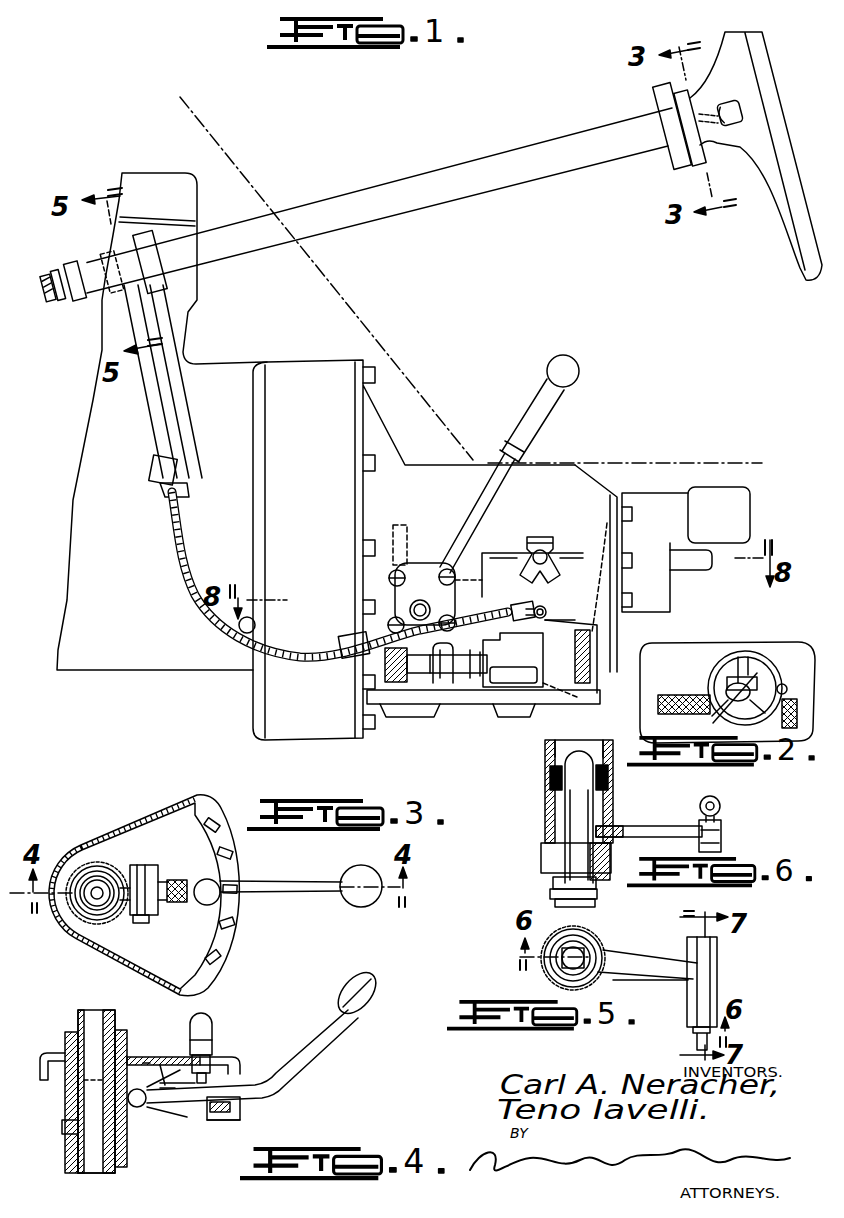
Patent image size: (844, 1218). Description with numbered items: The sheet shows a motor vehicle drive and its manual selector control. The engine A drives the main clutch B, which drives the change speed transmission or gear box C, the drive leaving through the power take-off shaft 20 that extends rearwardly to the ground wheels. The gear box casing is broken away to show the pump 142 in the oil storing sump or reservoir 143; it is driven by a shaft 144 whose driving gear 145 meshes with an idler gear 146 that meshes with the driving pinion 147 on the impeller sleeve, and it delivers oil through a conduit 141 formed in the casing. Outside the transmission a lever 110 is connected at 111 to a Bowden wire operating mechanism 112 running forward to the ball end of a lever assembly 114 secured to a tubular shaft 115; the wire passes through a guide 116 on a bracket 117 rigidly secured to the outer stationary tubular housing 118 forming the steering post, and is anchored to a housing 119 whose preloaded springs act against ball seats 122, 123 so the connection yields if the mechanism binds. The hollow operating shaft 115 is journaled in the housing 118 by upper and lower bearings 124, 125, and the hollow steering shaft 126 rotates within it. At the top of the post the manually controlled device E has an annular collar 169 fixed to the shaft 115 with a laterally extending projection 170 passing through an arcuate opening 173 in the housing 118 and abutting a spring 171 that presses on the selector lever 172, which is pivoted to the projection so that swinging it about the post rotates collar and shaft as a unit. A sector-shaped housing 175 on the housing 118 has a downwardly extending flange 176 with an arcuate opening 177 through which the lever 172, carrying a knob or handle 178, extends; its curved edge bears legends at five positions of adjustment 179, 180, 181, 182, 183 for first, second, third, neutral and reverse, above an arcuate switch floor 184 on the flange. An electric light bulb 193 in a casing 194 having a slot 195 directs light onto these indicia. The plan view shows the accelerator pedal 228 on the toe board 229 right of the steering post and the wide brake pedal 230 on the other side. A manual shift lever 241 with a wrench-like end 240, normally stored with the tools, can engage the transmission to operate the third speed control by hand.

In FIG. 1, the power take-off shaft 20 is at (689, 571).
In FIG. 1, the lever 110 is at (547, 586).
In FIG. 1, the connection 111 is at (534, 610).
In FIG. 1, the Bowden wire operating mechanism 112 is at (288, 662).
In FIG. 6, the lever assembly 114 is at (674, 835).
In FIG. 5, the lever assembly 114 is at (680, 973).
In FIG. 4, the hollow operating shaft 115 is at (120, 1160).
In FIG. 6, the hollow operating shaft 115 is at (563, 741).
In FIG. 1, the guide 116 is at (151, 485).
In FIG. 1, the bracket 117 is at (175, 404).
In FIG. 1, the outer stationary tubular housing 118 is at (220, 261).
In FIG. 2, the outer stationary tubular housing 118 is at (736, 662).
In FIG. 4, the outer stationary tubular housing 118 is at (67, 1160).
In FIG. 6, the outer stationary tubular housing 118 is at (547, 817).
In FIG. 5, the outer stationary tubular housing 118 is at (598, 942).
In FIG. 6, the housing 119 is at (721, 803).
In FIG. 5, the housing 119 is at (700, 1003).
In FIG. 1, the ball seat 122 is at (773, 84).
In FIG. 2, the ball seat 122 is at (705, 680).
In FIG. 4, the ball seat 123 is at (143, 1062).
In FIG. 3, the upper bearing 124 is at (141, 923).
In FIG. 4, the upper bearing 124 is at (133, 1108).
In FIG. 2, the lower bearing 125 is at (740, 695).
In FIG. 4, the lower bearing 125 is at (233, 1056).
In FIG. 6, the lower bearing 125 is at (550, 778).
In FIG. 1, the hollow steering shaft 126 is at (44, 302).
In FIG. 4, the hollow steering shaft 126 is at (90, 1168).
In FIG. 6, the hollow steering shaft 126 is at (607, 778).
In FIG. 1, the conduit 141 is at (606, 624).
In FIG. 1, the pump 142 is at (488, 664).
In FIG. 1, the oil storing sump or reservoir 143 is at (435, 706).
In FIG. 1, the shaft 144 is at (462, 684).
In FIG. 1, the driving gear 145 is at (396, 683).
In FIG. 1, the idler gear 146 is at (389, 591).
In FIG. 1, the driving pinion 147 is at (410, 536).
In FIG. 4, the annular collar 169 is at (65, 1101).
In FIG. 3, the laterally extending projection 170 is at (187, 878).
In FIG. 4, the laterally extending projection 170 is at (163, 1070).
In FIG. 4, the spring 171 is at (170, 1093).
In FIG. 3, the selector lever 172 is at (312, 894).
In FIG. 4, the selector lever 172 is at (317, 1052).
In FIG. 3, the arcuate opening 173 is at (112, 866).
In FIG. 3, the housing 175 is at (200, 797).
In FIG. 4, the flange 176 is at (240, 1110).
In FIG. 4, the arcuate opening 177 is at (240, 1070).
In FIG. 2, the knob or handle 178 is at (781, 684).
In FIG. 3, the knob or handle 178 is at (368, 907).
In FIG. 4, the knob or handle 178 is at (375, 990).
In FIG. 3, the position of adjustment 179 is at (238, 882).
In FIG. 3, the position of adjustment 180 is at (236, 852).
In FIG. 3, the position of adjustment 181 is at (214, 818).
In FIG. 3, the position of adjustment 182 is at (238, 922).
In FIG. 3, the position of adjustment 183 is at (230, 955).
In FIG. 4, the arcuate floor 184 is at (226, 1121).
In FIG. 4, the electric light bulb 193 is at (207, 1021).
In FIG. 4, the casing 194 is at (214, 1033).
In FIG. 4, the slot 195 is at (218, 1048).
In FIG. 2, the accelerator pedal 228 is at (790, 699).
In FIG. 1, the toe board 229 is at (218, 142).
In FIG. 2, the toe board 229 is at (748, 640).
In FIG. 2, the brake pedal 230 is at (668, 695).
In FIG. 1, the wrench-like end 240 is at (535, 581).
In FIG. 1, the manual shift lever 241 is at (536, 404).
In FIG. 1, the engine A is at (148, 185).
In FIG. 1, the main clutch B is at (316, 368).
In FIG. 1, the change speed transmission C is at (548, 476).
In FIG. 4, the manually controlled device E is at (143, 1055).